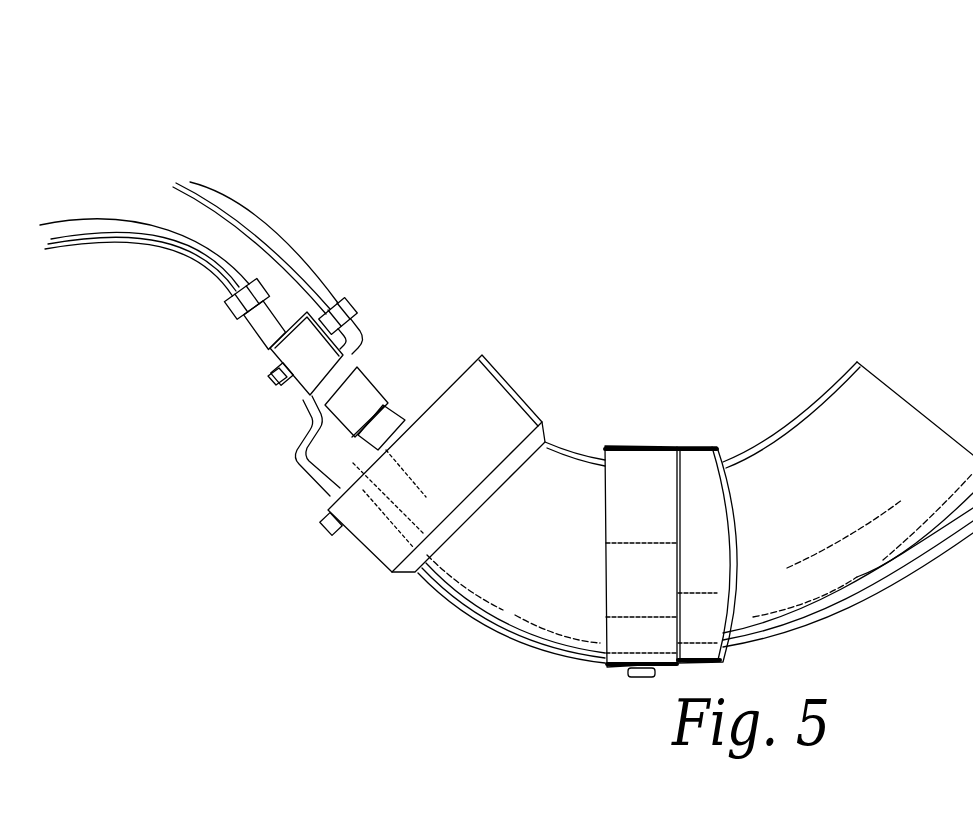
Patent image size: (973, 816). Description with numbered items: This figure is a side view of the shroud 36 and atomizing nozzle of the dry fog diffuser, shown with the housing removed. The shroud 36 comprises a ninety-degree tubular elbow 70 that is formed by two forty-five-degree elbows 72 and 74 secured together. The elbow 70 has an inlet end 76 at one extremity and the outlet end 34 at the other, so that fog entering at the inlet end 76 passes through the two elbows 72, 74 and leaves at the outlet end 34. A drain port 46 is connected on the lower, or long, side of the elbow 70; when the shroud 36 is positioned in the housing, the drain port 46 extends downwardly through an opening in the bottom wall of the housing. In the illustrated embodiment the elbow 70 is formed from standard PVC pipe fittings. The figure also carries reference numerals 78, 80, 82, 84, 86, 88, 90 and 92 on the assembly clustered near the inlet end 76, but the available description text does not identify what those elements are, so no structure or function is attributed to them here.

The outlet end 34 is at (941, 423).
The shroud 36 is at (657, 402).
The drain port 46 is at (643, 682).
The tubular elbow 70 is at (698, 433).
The 45-degree elbow 72 is at (478, 632).
The 45-degree elbow 74 is at (875, 600).
The inlet end 76 is at (463, 372).
The mounting plate 78 is at (396, 357).
The bracket block 80 is at (302, 468).
The tab 82 is at (328, 526).
The fastener 84 is at (284, 384).
The hose fitting 86 is at (262, 334).
The hose 88 is at (153, 241).
The hose fitting 90 is at (362, 350).
The hose 92 is at (270, 237).